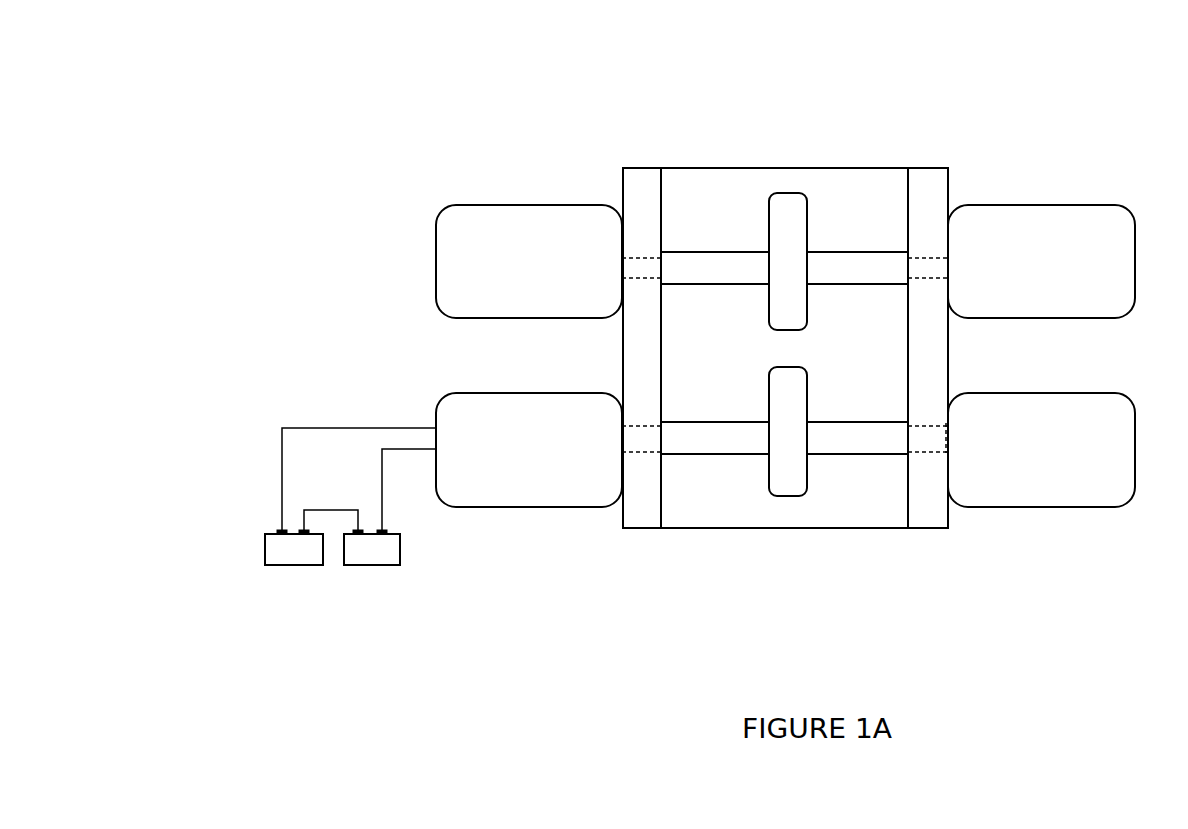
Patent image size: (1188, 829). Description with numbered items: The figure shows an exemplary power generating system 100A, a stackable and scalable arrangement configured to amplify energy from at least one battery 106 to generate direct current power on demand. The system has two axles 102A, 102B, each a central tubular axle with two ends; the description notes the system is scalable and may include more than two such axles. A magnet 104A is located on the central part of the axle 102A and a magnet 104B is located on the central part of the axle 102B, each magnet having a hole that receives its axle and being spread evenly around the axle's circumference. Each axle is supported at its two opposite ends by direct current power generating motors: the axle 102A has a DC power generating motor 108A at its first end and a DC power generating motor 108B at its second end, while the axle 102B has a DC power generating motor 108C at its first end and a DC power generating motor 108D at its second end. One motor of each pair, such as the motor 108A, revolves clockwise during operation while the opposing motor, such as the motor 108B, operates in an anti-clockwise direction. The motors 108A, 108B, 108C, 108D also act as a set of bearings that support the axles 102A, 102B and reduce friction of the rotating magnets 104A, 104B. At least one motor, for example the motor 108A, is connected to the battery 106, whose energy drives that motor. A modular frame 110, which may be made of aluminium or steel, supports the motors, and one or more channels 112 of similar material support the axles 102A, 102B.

The power generating system 100A is at (228, 72).
The axle 102A is at (845, 253).
The axle 102B is at (691, 435).
The magnet 104A is at (787, 194).
The magnet 104B is at (799, 454).
The battery 106 is at (372, 566).
The direct current power generating motor 108A is at (504, 499).
The direct current power generating motor 108B is at (1016, 499).
The direct current power generating motor 108C is at (504, 312).
The direct current power generating motor 108D is at (1016, 312).
The modular frame 110 is at (693, 168).
The channels 112 is at (653, 367).